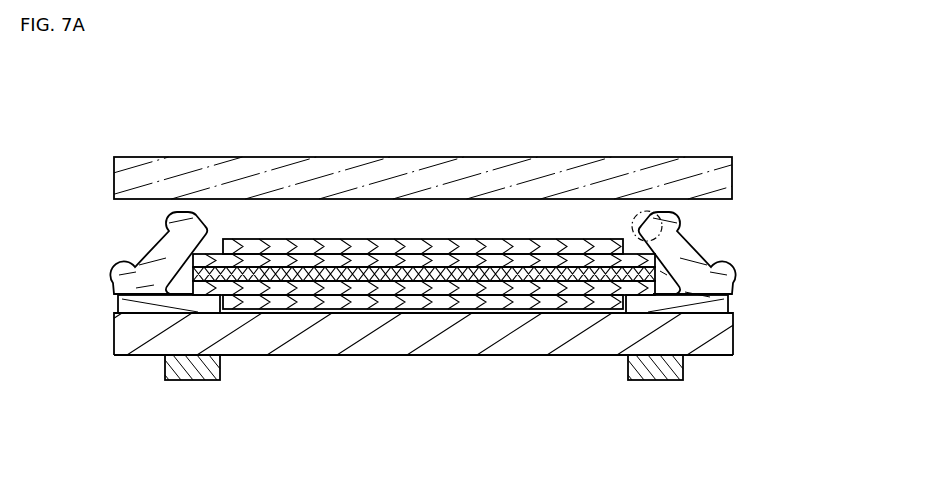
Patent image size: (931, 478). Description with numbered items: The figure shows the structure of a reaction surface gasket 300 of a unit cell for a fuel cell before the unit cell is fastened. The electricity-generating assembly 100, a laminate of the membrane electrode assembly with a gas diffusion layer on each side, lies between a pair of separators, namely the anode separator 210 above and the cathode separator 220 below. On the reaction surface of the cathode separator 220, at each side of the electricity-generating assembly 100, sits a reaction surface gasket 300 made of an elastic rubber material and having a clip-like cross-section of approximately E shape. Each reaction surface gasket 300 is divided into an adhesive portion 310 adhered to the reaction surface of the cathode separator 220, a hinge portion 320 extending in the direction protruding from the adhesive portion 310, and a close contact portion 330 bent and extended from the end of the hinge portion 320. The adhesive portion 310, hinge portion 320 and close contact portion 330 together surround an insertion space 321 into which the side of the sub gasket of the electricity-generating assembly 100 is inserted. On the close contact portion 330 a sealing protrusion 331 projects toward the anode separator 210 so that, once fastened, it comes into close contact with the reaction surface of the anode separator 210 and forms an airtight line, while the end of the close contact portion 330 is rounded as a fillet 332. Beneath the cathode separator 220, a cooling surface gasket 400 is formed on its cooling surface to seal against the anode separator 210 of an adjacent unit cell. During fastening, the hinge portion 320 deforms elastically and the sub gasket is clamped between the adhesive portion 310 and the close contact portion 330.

The electricity-generating assembly 100 is at (513, 226).
The anode separator 210 is at (733, 178).
The cathode separator 220 is at (717, 338).
The reaction surface gasket 300 is at (126, 238).
The adhesive portion 310 is at (730, 308).
The hinge portion 320 is at (729, 294).
The insertion space 321 is at (698, 256).
The close contact portion 330 is at (724, 261).
The sealing protrusion 331 is at (679, 214).
The fillet 332 is at (632, 212).
The cooling surface gasket 400 is at (660, 370).